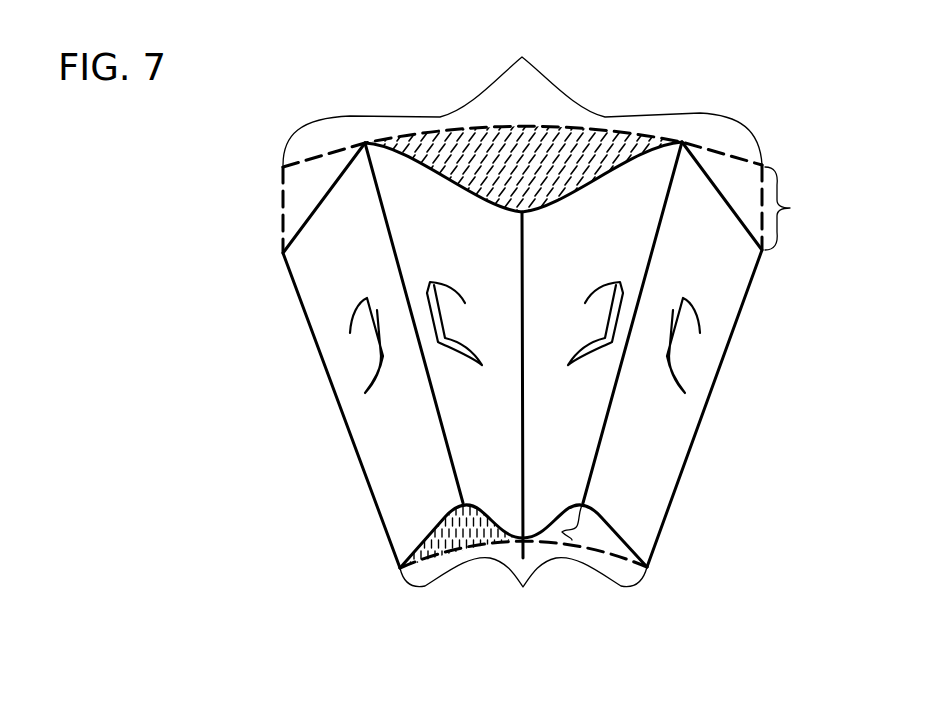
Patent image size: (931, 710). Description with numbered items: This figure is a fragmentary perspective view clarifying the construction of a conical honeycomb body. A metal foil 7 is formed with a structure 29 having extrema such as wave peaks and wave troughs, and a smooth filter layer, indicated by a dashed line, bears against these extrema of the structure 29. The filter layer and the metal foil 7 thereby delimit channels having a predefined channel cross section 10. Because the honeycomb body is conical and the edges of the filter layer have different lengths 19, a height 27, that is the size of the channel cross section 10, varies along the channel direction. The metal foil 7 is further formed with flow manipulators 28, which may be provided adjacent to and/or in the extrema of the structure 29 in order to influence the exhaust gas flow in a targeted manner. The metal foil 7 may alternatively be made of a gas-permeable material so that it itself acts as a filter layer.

The metal foil 7 is at (707, 408).
The channel cross section 10 is at (612, 147).
The lengths 19 is at (522, 324).
The height 27 is at (602, 587).
The flow manipulators 28 is at (367, 350).
The structure 29 is at (417, 449).